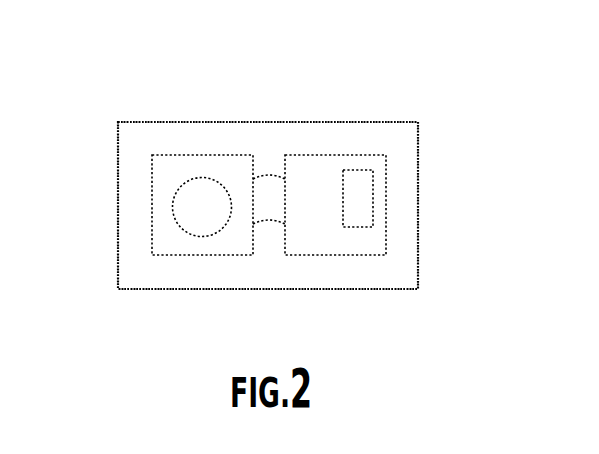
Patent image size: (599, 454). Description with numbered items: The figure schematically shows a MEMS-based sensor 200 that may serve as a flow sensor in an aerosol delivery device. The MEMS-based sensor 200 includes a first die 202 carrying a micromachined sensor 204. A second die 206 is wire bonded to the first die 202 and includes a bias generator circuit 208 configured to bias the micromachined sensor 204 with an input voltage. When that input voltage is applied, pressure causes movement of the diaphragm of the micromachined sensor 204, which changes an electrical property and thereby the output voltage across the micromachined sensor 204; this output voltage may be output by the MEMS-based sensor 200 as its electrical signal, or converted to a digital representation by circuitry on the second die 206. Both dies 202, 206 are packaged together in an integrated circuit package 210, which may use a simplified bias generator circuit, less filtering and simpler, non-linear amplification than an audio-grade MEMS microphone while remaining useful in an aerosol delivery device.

The MEMS-based sensor 200 is at (266, 58).
The first die 202 is at (152, 205).
The micromachined sensor 204 is at (197, 237).
The second die 206 is at (386, 223).
The bias generator circuit 208 is at (358, 170).
The integrated circuit package 210 is at (193, 122).